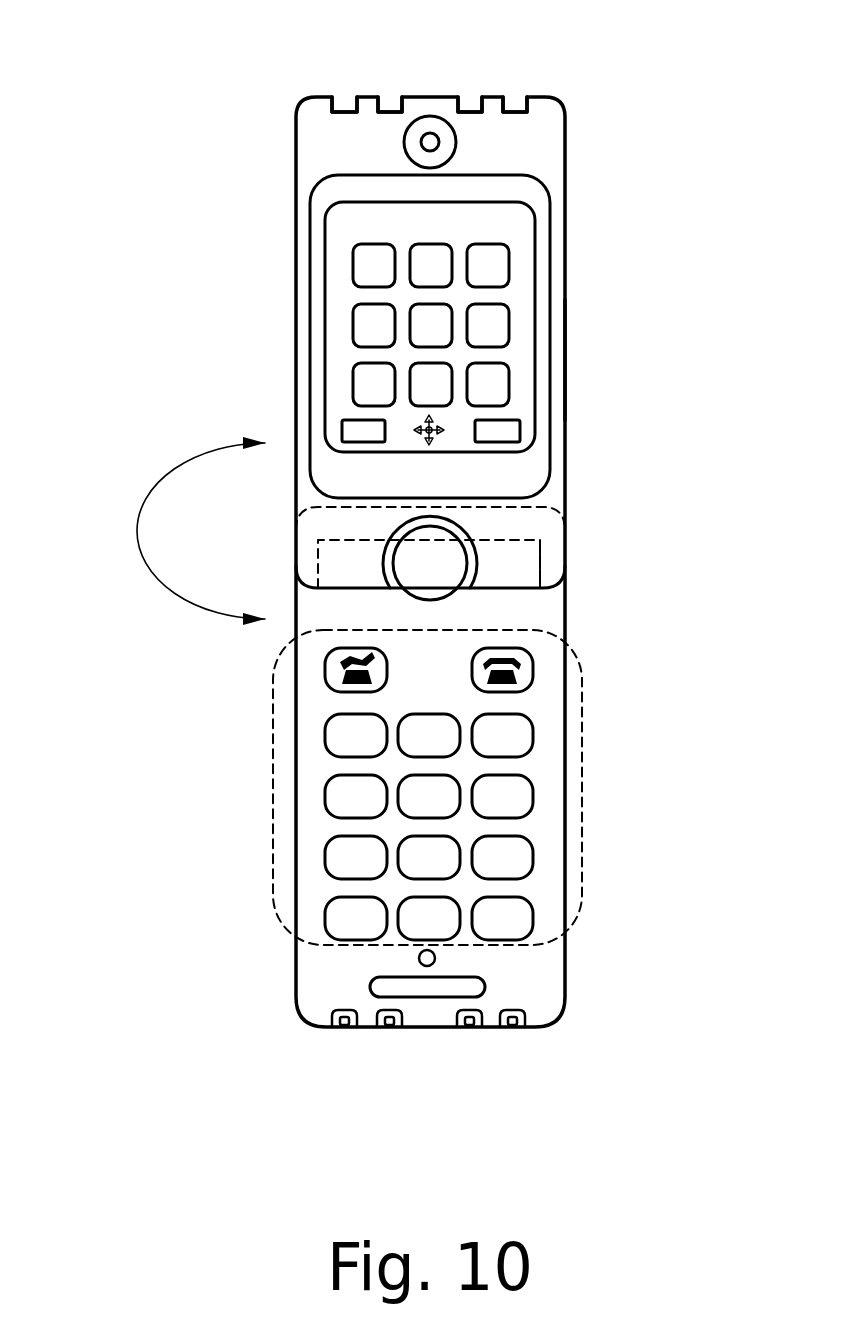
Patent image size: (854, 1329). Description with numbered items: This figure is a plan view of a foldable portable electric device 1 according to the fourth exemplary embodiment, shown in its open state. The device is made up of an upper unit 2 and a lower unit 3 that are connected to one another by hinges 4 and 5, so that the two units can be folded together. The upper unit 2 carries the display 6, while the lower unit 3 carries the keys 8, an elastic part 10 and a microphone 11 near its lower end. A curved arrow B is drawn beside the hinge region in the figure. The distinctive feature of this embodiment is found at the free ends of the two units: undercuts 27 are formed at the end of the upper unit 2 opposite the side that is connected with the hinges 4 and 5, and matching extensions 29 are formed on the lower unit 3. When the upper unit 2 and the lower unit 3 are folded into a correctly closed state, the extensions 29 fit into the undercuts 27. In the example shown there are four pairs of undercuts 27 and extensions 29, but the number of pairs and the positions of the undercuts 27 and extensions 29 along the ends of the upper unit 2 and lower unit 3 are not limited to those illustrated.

The foldable electric device 1 is at (585, 270).
The upper unit 2 is at (560, 352).
The lower unit 3 is at (543, 657).
The hinge 4 is at (517, 562).
The hinge 5 is at (428, 563).
The display 6 is at (315, 348).
The keys 8 is at (583, 780).
The elastic part 10 is at (413, 987).
The microphone 11 is at (433, 964).
The undercuts 27 is at (345, 100).
The extensions 29 is at (338, 1028).
The rotation direction B is at (147, 492).